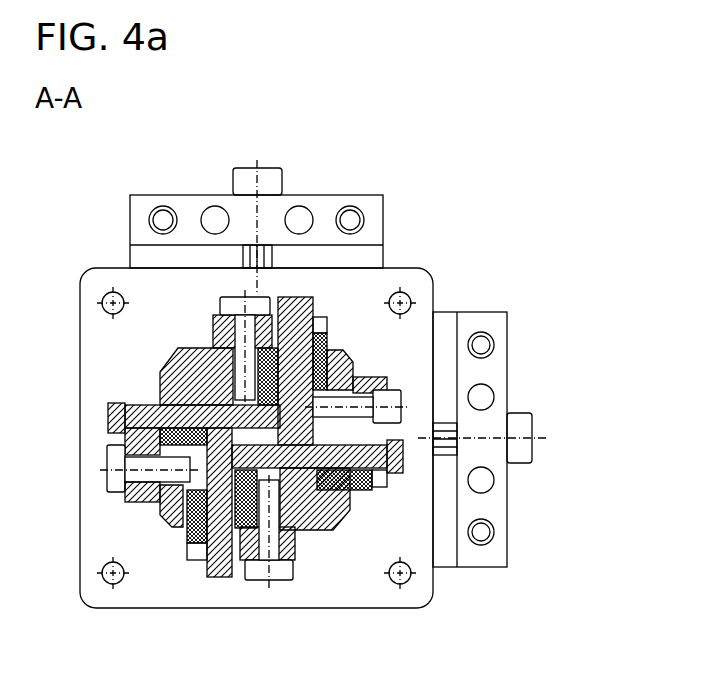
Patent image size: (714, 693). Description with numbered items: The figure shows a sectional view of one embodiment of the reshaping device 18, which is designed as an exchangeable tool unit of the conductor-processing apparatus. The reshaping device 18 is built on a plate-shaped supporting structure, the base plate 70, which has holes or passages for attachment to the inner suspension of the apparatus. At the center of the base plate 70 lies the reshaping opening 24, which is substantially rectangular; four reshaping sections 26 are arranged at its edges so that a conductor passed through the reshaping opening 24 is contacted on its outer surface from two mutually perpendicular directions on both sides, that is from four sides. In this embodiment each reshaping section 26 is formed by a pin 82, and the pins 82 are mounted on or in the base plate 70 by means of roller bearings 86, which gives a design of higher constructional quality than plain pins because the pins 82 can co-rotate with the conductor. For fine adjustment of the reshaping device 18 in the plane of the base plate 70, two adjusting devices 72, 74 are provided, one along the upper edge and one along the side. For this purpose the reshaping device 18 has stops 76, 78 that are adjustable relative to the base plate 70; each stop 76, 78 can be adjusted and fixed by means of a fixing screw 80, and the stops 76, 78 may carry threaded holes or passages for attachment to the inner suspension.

The reshaping device 18 is at (473, 213).
The reshaping opening 24 is at (247, 435).
The reshaping section 26 is at (219, 433).
The base plate 70 is at (257, 610).
The adjusting device 72 is at (264, 190).
The adjusting device 74 is at (515, 445).
The stop 76 is at (189, 207).
The stop 78 is at (497, 370).
The fixing screw 80 is at (245, 165).
The pin 82 is at (107, 420).
The roller bearing 86 is at (160, 390).